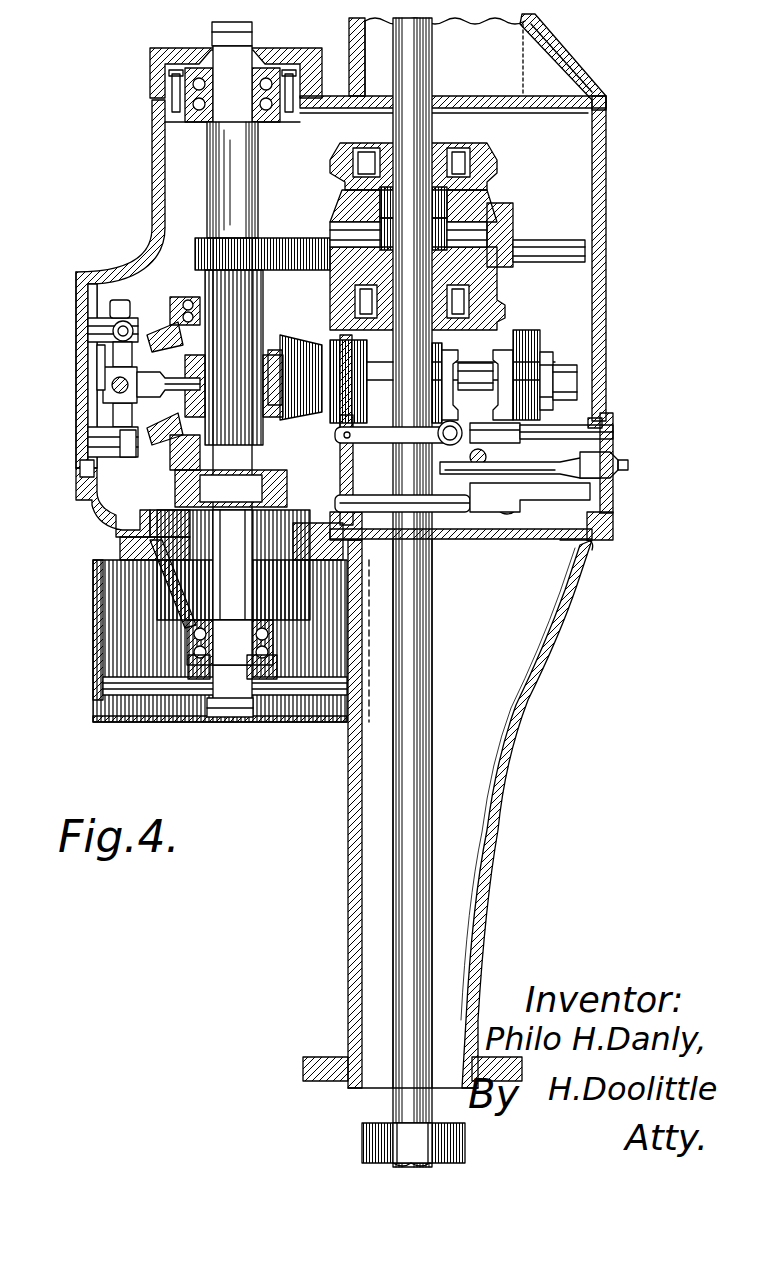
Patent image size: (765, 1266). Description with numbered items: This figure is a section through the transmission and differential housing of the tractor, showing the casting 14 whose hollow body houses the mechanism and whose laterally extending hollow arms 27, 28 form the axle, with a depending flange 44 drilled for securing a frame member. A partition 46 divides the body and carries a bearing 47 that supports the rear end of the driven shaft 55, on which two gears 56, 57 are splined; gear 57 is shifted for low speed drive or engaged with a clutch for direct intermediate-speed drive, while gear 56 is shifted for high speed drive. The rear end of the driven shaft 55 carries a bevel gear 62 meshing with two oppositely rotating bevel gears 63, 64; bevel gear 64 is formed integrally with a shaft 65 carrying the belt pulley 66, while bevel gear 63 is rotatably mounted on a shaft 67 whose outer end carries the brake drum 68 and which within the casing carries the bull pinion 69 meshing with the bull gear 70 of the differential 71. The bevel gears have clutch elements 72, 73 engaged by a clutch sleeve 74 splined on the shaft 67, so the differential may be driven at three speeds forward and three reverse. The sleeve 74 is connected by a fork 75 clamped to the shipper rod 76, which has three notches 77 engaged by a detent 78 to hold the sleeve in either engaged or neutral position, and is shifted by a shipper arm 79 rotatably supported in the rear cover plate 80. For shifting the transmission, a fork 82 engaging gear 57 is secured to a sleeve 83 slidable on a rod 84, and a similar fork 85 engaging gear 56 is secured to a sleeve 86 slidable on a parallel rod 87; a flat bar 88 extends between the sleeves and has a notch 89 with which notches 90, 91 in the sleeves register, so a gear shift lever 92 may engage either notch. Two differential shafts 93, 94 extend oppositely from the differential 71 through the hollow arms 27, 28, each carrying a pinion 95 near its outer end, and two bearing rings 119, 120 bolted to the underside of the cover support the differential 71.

The casting 14 is at (497, 823).
The hollow arm 27 is at (352, 36).
The hollow arm 28 is at (350, 900).
The depending flange 44 is at (585, 136).
The partition 46 is at (347, 463).
The bearing 47 is at (334, 342).
The driven shaft 55 is at (527, 367).
The gear 56 is at (478, 372).
The gear 57 is at (543, 417).
The bevel gear 62 is at (306, 338).
The bevel gear 63 is at (167, 320).
The bevel gear 64 is at (80, 494).
The shaft 65 is at (240, 532).
The belt pulley 66 is at (110, 594).
The shaft 67 is at (165, 258).
The brake drum 68 is at (152, 72).
The bull pinion 69 is at (200, 240).
The bull gear 70 is at (298, 240).
The differential 71 is at (480, 210).
The clutch element 72 is at (175, 372).
The clutch element 73 is at (133, 432).
The clutch sleeve 74 is at (145, 380).
The fork 75 is at (110, 382).
The shipper rod 76 is at (118, 410).
The notches 77 is at (108, 318).
The detent 78 is at (80, 272).
The shipper arm 79 is at (120, 430).
The rear cover plate 80 is at (76, 290).
The fork 82 is at (507, 348).
The sleeve 83 is at (590, 544).
The rod 84 is at (388, 505).
The fork 85 is at (443, 345).
The sleeve 86 is at (571, 430).
The rod 87 is at (590, 412).
The flat bar 88 is at (628, 465).
The notch 89 is at (600, 490).
The notch 90 is at (478, 468).
The notch 91 is at (612, 445).
The gear shift lever 92 is at (606, 421).
The differential shaft 93 is at (430, 62).
The differential shaft 94 is at (432, 660).
The pinion 95 is at (362, 1133).
The bearing ring 119 is at (455, 325).
The bearing ring 120 is at (488, 152).